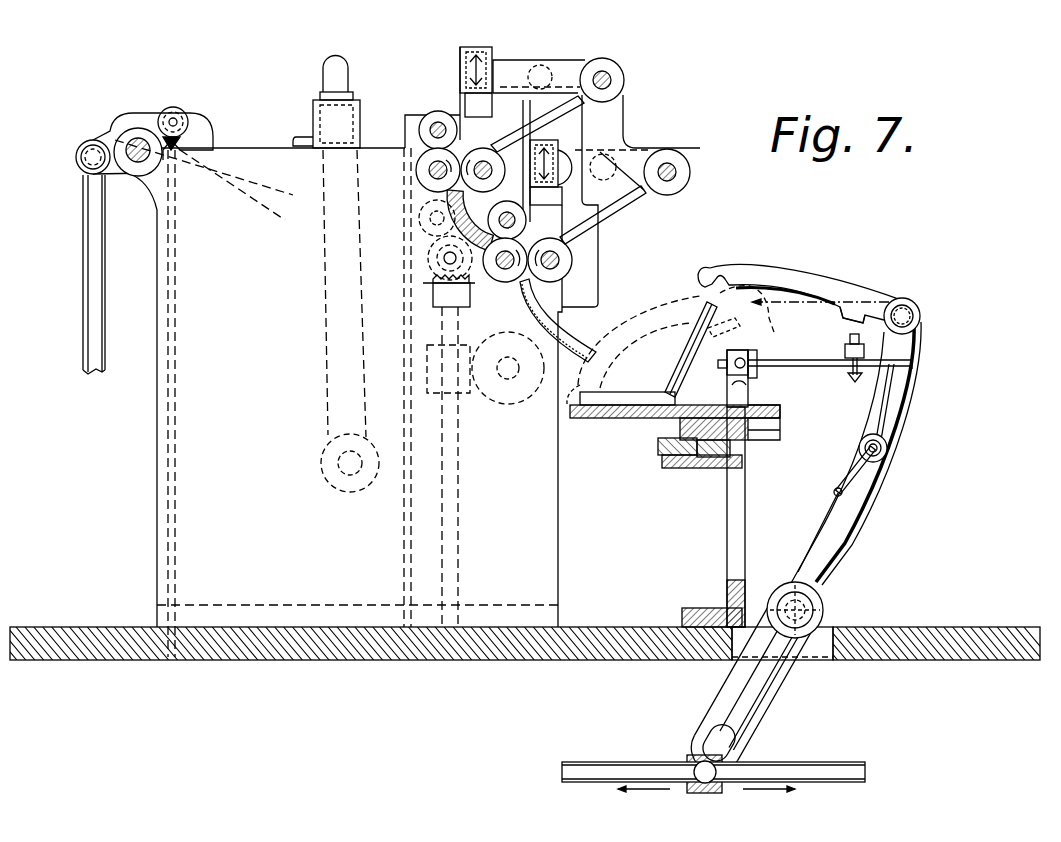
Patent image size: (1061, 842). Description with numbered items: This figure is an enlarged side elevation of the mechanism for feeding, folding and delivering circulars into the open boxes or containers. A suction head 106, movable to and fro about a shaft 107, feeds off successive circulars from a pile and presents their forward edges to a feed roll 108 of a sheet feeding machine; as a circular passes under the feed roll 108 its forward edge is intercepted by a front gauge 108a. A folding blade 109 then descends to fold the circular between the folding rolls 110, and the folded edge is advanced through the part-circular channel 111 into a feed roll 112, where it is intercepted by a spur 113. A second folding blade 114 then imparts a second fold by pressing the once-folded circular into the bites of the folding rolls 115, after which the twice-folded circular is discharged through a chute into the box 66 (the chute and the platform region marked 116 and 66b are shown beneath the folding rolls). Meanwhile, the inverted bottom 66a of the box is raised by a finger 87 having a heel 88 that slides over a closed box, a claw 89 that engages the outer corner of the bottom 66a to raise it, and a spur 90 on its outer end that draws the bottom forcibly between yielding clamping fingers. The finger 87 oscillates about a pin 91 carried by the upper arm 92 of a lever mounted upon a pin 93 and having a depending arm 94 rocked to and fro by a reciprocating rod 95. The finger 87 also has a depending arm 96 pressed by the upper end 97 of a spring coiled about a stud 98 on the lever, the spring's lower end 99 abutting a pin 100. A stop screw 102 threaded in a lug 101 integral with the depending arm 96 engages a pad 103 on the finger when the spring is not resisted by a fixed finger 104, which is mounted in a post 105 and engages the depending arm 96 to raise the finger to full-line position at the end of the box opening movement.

The box 66 is at (648, 401).
The inverted bottom 66a is at (698, 325).
The platform 66b is at (648, 412).
The finger 87 is at (817, 278).
The heel 88 is at (734, 283).
The claw 89 is at (708, 275).
The spur 90 is at (700, 290).
The pin 91 is at (920, 316).
The upper arm 92 is at (858, 525).
The pin 93 is at (823, 611).
The depending arm 94 is at (760, 705).
The reciprocating rod 95 is at (588, 765).
The depending arm 96 is at (918, 351).
The upper end of spring 97 is at (896, 402).
The stud 98 is at (881, 459).
The lower end of spring 99 is at (841, 483).
The pin 100 is at (836, 496).
The lug 101 is at (845, 350).
The stop screw 102 is at (853, 383).
The pad 103 is at (858, 318).
The fixed finger 104 is at (893, 363).
The post 105 is at (748, 380).
The suction head 106 is at (313, 118).
The shaft 107 is at (340, 470).
The feed roll 108 is at (438, 112).
The front gauge 108a is at (520, 123).
The folding blade 109 is at (460, 78).
The folding rolls 110 is at (486, 143).
The part-circular channel 111 is at (445, 216).
The feed roll 112 is at (523, 250).
The spur 113 is at (612, 198).
The second folding blade 114 is at (562, 204).
The folding rolls 115 is at (514, 285).
The guide 116 is at (580, 350).